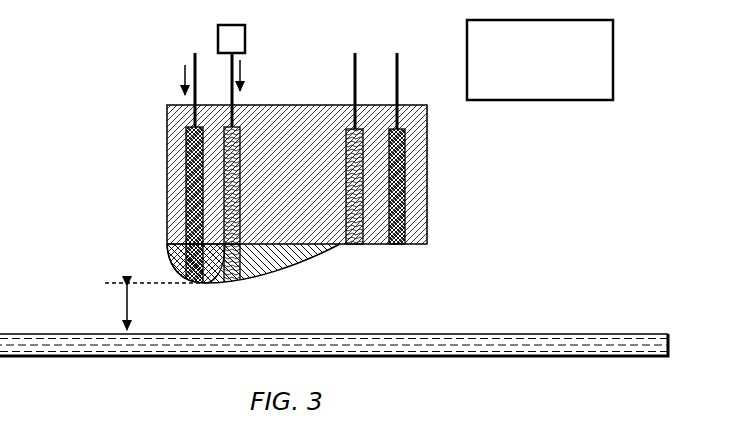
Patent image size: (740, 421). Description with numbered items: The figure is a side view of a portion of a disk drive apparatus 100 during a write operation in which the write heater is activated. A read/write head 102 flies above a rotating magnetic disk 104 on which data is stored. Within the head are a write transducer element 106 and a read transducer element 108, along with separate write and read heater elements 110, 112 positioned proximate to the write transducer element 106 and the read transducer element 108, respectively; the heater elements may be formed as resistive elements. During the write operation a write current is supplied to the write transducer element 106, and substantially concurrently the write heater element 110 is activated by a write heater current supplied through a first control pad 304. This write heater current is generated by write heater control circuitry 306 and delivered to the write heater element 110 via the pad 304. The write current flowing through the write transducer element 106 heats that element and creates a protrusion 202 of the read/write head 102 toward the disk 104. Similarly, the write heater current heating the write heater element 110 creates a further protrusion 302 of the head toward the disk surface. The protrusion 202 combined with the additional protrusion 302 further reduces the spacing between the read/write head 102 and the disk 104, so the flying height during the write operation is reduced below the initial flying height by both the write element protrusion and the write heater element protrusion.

The disk drive apparatus 100 is at (124, 50).
The read/write head 102 is at (167, 120).
The rotating magnetic disk 104 is at (480, 334).
The write transducer element 106 is at (186, 160).
The read transducer element 108 is at (405, 158).
The write heater element 110 is at (241, 160).
The read heater element 112 is at (346, 168).
The protrusion 202 is at (176, 250).
The further protrusion 302 is at (302, 272).
The first control pad 304 is at (218, 35).
The write heater control circuitry 306 is at (467, 38).